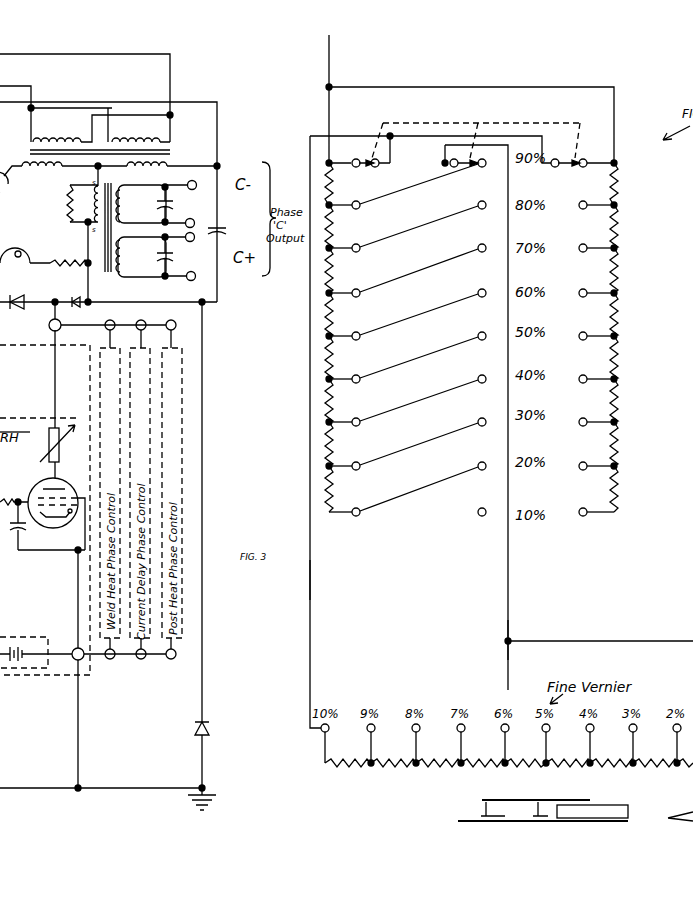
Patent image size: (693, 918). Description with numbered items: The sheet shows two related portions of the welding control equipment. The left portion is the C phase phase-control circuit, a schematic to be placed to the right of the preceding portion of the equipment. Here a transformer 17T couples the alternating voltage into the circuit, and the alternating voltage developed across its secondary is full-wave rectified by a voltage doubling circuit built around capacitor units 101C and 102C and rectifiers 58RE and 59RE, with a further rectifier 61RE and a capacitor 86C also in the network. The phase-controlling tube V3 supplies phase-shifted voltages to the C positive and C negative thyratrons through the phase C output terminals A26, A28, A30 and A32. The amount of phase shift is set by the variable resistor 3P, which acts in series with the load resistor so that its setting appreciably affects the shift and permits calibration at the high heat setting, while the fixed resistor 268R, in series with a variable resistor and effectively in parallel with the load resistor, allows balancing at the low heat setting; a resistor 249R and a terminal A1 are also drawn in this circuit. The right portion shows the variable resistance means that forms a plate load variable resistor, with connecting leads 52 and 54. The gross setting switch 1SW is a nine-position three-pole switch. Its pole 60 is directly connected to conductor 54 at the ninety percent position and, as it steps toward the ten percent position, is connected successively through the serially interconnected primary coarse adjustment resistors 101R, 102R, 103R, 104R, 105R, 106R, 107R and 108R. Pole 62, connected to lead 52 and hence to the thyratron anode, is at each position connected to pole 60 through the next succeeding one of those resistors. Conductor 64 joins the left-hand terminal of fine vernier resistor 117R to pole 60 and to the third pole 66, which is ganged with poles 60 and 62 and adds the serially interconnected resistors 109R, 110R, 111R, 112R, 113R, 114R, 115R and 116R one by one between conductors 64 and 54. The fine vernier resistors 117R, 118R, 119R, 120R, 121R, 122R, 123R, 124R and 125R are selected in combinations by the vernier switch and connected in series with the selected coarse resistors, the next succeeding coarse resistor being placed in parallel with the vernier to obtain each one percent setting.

In FIG. 3, the transformer 17T is at (170, 150).
In FIG. 3, the variable resistor 3P is at (15, 172).
In FIG. 3, the resistor 249R is at (68, 205).
In FIG. 3, the fixed resistor 268R is at (28, 260).
In FIG. 3, the rectifier 58RE is at (22, 285).
In FIG. 3, the rectifier 59RE is at (80, 310).
In FIG. 3, the capacitor unit 101C is at (158, 202).
In FIG. 3, the capacitor unit 102C is at (158, 254).
In FIG. 3, the terminal A26 is at (196, 183).
In FIG. 3, the terminal A28 is at (195, 221).
In FIG. 3, the capacitor 86C is at (222, 226).
In FIG. 3, the terminal A30 is at (195, 238).
In FIG. 3, the terminal A32 is at (196, 277).
In FIG. 3, the rectifier 61RE is at (194, 730).
In FIG. 3, the terminal A1 is at (18, 640).
In FIG. 3, the vacuum tube V3 is at (68, 481).
In FIG. 4, the conductor 54 is at (330, 63).
In FIG. 4, the gross setting switch 1SW is at (506, 130).
In FIG. 4, the pole 60 is at (368, 158).
In FIG. 4, the pole 62 is at (476, 168).
In FIG. 4, the third pole 66 is at (562, 168).
In FIG. 4, the conductor 64 is at (311, 590).
In FIG. 4, the lead 52 is at (506, 655).
In FIG. 4, the primary coarse adjustment resistor 101R is at (337, 187).
In FIG. 4, the primary coarse adjustment resistor 102R is at (337, 229).
In FIG. 4, the primary coarse adjustment resistor 103R is at (337, 272).
In FIG. 4, the primary coarse adjustment resistor 104R is at (337, 317).
In FIG. 4, the primary coarse adjustment resistor 105R is at (337, 360).
In FIG. 4, the primary coarse adjustment resistor 106R is at (337, 403).
In FIG. 4, the primary coarse adjustment resistor 107R is at (337, 446).
In FIG. 4, the primary coarse adjustment resistor 108R is at (337, 490).
In FIG. 4, the serially interconnected resistor 109R is at (622, 187).
In FIG. 4, the serially interconnected resistor 110R is at (622, 229).
In FIG. 4, the serially interconnected resistor 111R is at (622, 272).
In FIG. 4, the serially interconnected resistor 112R is at (622, 317).
In FIG. 4, the serially interconnected resistor 113R is at (622, 360).
In FIG. 4, the serially interconnected resistor 114R is at (622, 403).
In FIG. 4, the serially interconnected resistor 115R is at (622, 446).
In FIG. 4, the serially interconnected resistor 116R is at (622, 490).
In FIG. 4, the fine vernier resistor 117R is at (348, 768).
In FIG. 4, the fine vernier resistor 118R is at (400, 768).
In FIG. 4, the fine vernier resistor 119R is at (434, 768).
In FIG. 4, the fine vernier resistor 120R is at (480, 768).
In FIG. 4, the fine vernier resistor 121R is at (530, 768).
In FIG. 4, the fine vernier resistor 122R is at (568, 768).
In FIG. 4, the fine vernier resistor 123R is at (606, 768).
In FIG. 4, the fine vernier resistor 124R is at (655, 768).
In FIG. 4, the fine vernier resistor 125R is at (680, 768).